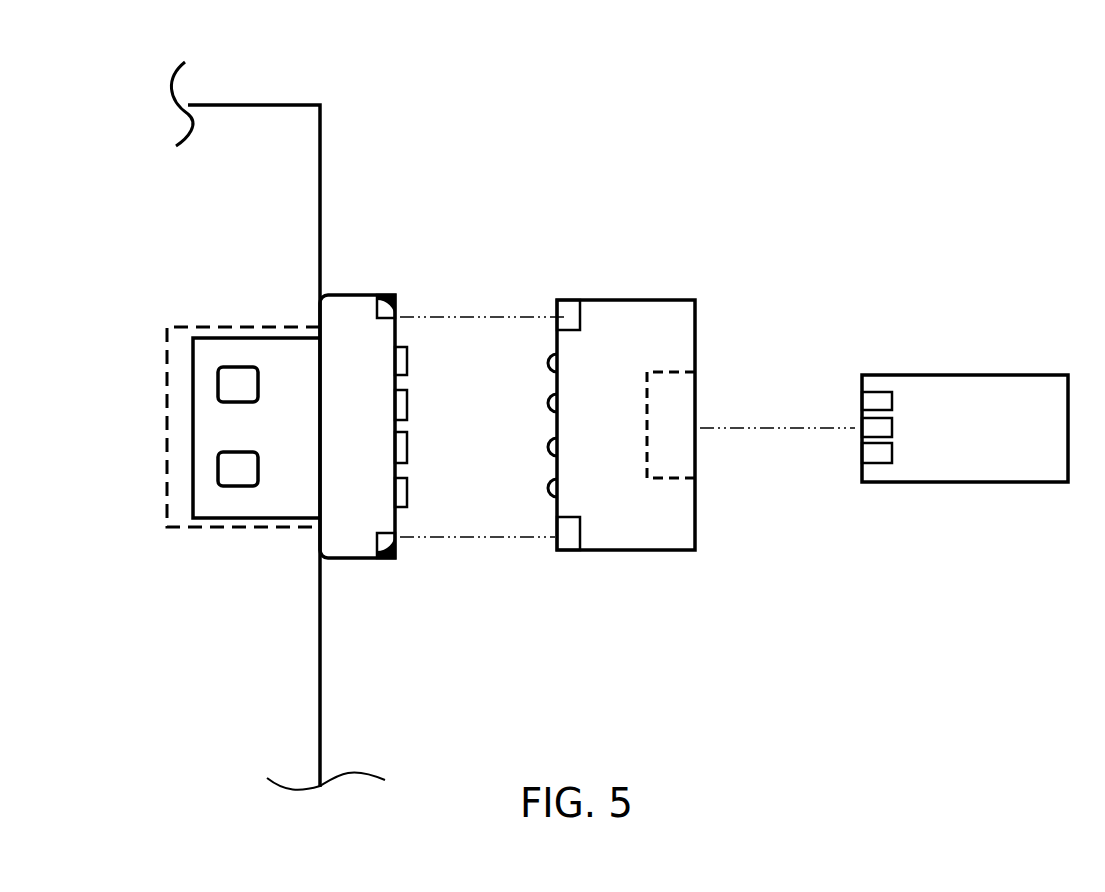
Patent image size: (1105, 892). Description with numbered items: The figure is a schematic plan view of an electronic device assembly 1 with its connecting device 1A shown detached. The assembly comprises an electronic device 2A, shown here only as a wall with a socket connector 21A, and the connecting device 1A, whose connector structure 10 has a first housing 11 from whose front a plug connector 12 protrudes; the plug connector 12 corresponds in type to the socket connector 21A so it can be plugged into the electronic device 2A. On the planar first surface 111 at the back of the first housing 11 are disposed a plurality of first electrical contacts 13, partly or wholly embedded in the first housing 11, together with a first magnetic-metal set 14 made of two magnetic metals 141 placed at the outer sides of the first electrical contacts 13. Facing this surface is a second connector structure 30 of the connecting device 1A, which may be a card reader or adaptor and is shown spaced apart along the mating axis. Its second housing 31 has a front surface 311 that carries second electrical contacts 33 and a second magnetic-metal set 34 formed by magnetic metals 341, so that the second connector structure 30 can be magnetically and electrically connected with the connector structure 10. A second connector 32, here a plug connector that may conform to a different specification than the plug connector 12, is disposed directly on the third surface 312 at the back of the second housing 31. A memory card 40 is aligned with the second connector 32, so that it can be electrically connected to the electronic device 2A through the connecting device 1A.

The electronic device assembly 1 is at (131, 61).
The connecting device 1A is at (490, 200).
The electronic device 2A is at (325, 127).
The socket connector 21A is at (167, 345).
The connector structure 10 is at (254, 437).
The first housing 11 is at (442, 418).
The plug connector 12 is at (216, 497).
The first electrical contacts 13 is at (401, 347).
The first magnetic-metal set 14 is at (389, 590).
The magnetic metals 141 is at (385, 560).
The first surface 111 is at (401, 514).
The second connector structure 30 is at (655, 411).
The second housing 31 is at (680, 342).
The elastic contacts 311 is at (549, 478).
The third surface 312 is at (698, 500).
The second connector 32 is at (678, 388).
The second electrical contacts 33 is at (550, 355).
The second magnetic-metal set 34 is at (587, 591).
The magnetic metals 341 is at (568, 530).
The memory card 40 is at (962, 372).